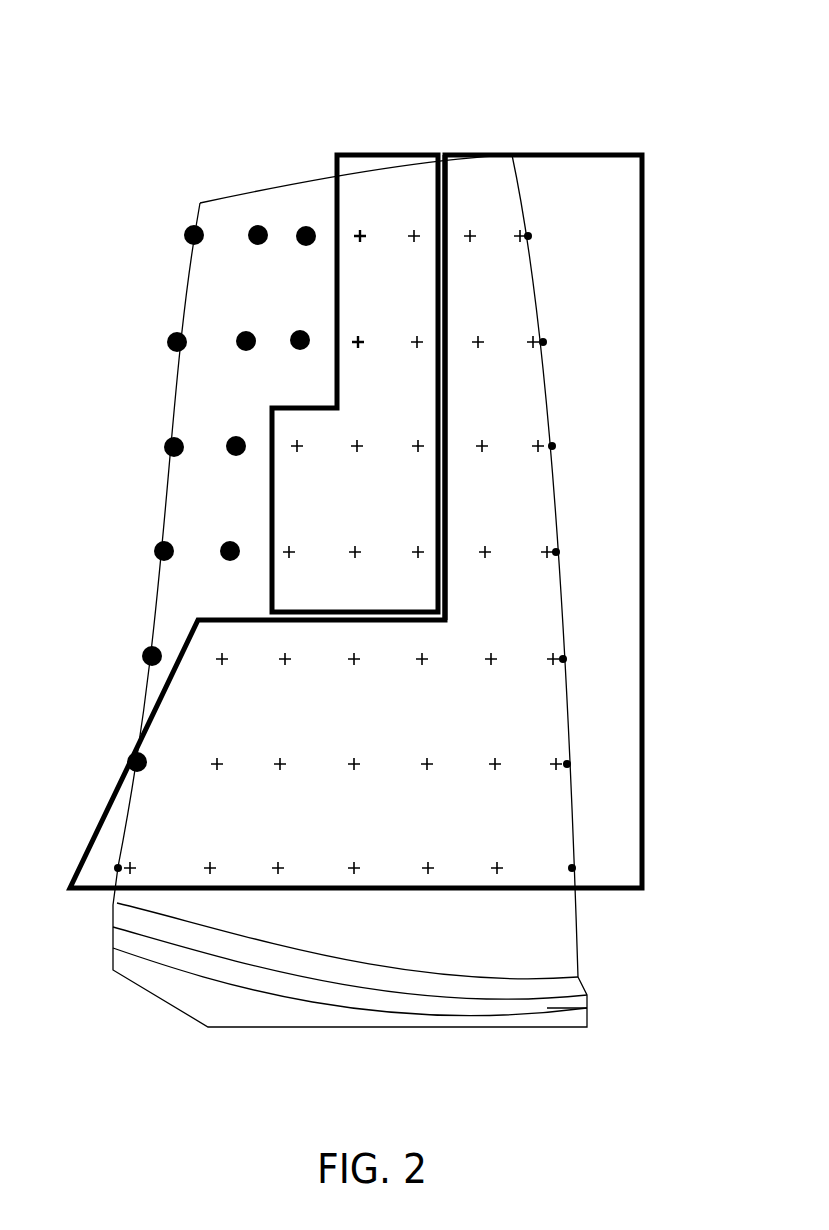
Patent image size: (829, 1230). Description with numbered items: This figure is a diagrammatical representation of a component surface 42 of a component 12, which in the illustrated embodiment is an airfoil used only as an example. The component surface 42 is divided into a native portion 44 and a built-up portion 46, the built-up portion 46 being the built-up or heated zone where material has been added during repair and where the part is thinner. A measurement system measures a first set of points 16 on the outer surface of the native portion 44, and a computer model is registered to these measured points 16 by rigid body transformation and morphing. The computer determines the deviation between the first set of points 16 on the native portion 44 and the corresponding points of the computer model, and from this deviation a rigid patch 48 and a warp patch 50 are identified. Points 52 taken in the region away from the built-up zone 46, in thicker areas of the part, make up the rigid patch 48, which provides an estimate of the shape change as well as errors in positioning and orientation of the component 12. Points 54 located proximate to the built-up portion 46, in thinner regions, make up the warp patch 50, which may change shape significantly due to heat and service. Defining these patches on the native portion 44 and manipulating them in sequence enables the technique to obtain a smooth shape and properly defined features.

The component 12 is at (503, 78).
The first set of points 16 is at (720, 453).
The component surface 42 is at (537, 960).
The native portion 44 is at (515, 144).
The built-up portion 46 is at (221, 214).
The rigid patch 48 is at (512, 716).
The warp patch 50 is at (357, 201).
The points 52 is at (485, 552).
The points 54 is at (355, 552).